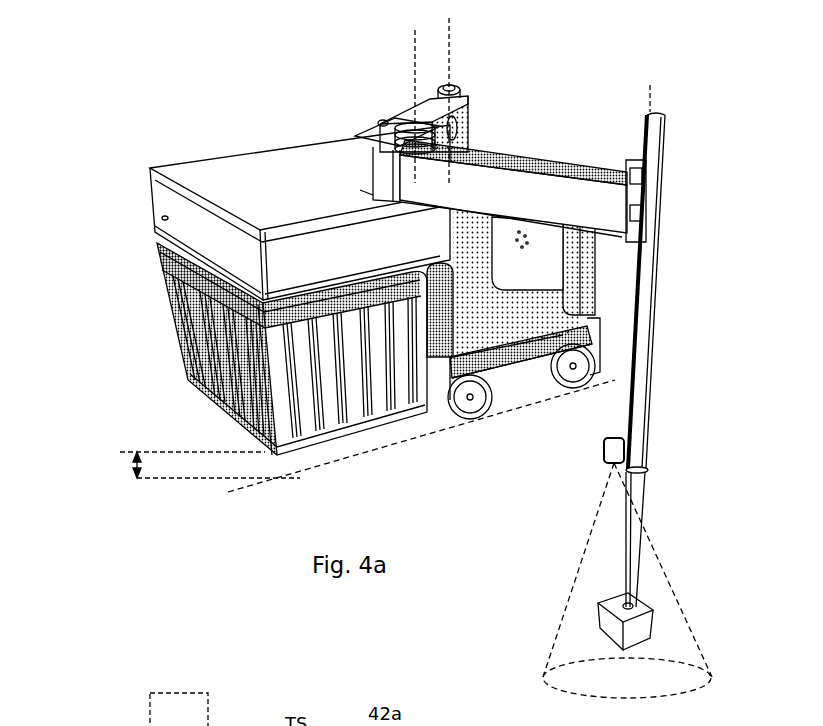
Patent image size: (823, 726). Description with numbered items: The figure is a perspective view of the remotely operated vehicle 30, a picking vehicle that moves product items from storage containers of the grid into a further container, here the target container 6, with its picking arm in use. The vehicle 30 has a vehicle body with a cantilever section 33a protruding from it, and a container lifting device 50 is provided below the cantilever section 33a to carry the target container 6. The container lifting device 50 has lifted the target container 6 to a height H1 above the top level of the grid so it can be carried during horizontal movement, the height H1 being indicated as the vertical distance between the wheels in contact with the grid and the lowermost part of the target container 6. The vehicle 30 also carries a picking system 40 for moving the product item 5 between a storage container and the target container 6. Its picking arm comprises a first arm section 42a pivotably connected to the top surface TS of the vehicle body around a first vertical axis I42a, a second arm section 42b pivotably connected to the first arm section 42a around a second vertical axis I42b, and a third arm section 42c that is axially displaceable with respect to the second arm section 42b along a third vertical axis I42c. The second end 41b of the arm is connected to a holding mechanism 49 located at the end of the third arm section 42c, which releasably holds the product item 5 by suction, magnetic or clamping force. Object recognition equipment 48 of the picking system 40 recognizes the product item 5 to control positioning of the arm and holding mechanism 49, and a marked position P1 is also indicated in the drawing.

The remotely operated vehicle 30 is at (113, 162).
The container lifting device 50 is at (113, 238).
The top surface TS is at (278, 165).
The cantilever section 33a is at (335, 276).
The target container 6 is at (197, 350).
The first arm section 42a is at (410, 115).
The second arm section 42b is at (512, 197).
The third arm section 42c is at (640, 305).
The picking system 40 is at (693, 138).
The second end 41b is at (625, 586).
The holding mechanism 49 is at (630, 604).
The product item 5 is at (635, 628).
The object recognition equipment 48 is at (578, 465).
The first vertical axis I42a is at (447, 91).
The second vertical axis I42b is at (393, 97).
The third vertical axis I42c is at (639, 87).
The height H1 is at (191, 465).
The position P1 is at (179, 709).